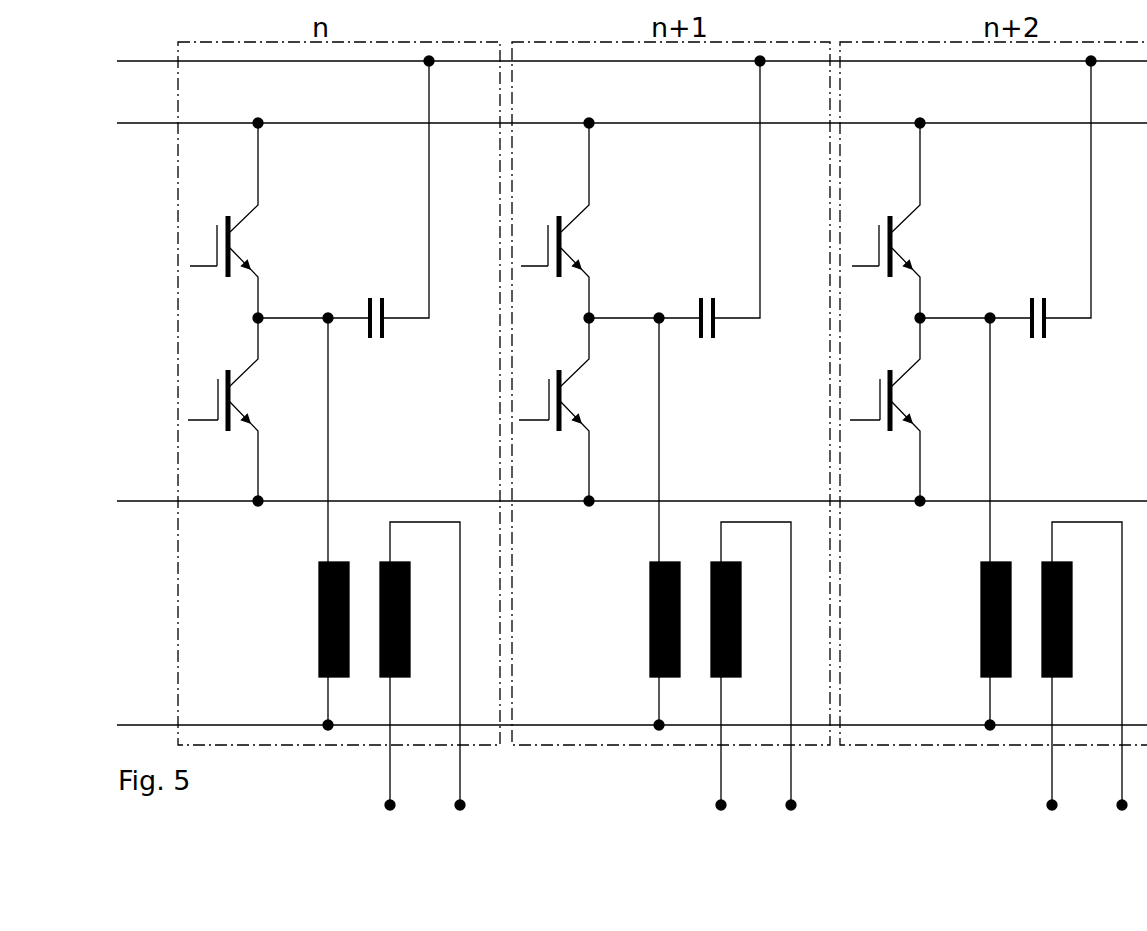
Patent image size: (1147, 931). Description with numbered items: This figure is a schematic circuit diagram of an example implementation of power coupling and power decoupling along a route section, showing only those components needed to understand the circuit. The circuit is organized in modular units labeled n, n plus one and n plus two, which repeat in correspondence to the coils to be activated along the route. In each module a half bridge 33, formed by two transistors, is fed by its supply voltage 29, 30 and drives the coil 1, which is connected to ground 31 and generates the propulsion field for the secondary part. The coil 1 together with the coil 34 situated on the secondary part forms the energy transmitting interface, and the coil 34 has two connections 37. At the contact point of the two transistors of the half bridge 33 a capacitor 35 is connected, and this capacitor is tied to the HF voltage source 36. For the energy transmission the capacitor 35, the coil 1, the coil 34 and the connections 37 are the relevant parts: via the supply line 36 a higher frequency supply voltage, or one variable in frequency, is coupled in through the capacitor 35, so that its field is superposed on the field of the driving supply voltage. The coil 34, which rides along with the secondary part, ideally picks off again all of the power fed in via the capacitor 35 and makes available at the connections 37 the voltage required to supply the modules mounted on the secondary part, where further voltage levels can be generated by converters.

The coil 1 is at (319, 622).
The supply voltage 29 is at (632, 107).
The supply voltage 30 is at (632, 486).
The ground 31 is at (632, 710).
The half bridge 33 is at (618, 335).
The coil 34 is at (410, 622).
The capacitor 35 is at (677, 214).
The HF voltage source 36 is at (632, 48).
The connections 37 is at (756, 802).